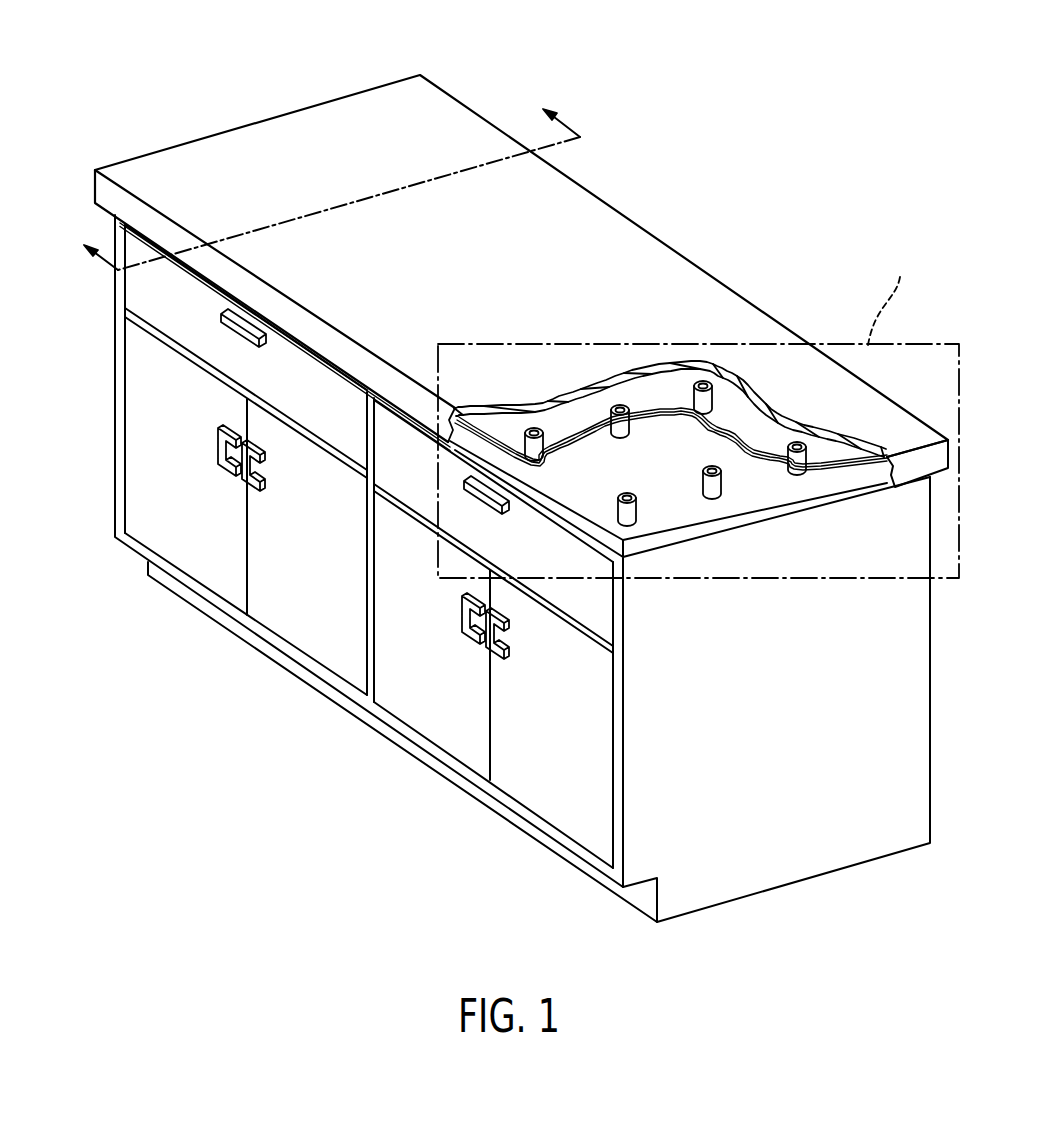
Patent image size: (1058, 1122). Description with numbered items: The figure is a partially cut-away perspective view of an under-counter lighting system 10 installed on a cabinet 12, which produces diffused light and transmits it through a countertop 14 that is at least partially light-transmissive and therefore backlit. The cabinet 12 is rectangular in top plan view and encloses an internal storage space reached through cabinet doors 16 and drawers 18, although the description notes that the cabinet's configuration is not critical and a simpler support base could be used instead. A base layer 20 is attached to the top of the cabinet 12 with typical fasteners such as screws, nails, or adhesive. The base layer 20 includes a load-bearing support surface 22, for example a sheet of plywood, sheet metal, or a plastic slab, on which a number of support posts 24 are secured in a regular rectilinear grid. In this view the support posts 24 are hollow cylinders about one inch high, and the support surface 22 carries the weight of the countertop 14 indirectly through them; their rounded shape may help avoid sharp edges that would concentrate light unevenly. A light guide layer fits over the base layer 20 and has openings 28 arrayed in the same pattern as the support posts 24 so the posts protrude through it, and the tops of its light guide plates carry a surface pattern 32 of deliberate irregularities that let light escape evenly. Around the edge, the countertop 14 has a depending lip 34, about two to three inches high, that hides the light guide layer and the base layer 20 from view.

The under-counter lighting system 10 is at (302, 92).
The cabinet 12 is at (113, 421).
The countertop 14 is at (605, 216).
The cabinet doors 16 is at (300, 628).
The drawers 18 is at (160, 293).
The base layer 20 is at (765, 512).
The support surface 22 is at (662, 507).
The support posts 24 is at (618, 432).
The openings 28 is at (814, 472).
The surface pattern 32 is at (753, 412).
The depending lip 34 is at (347, 353).